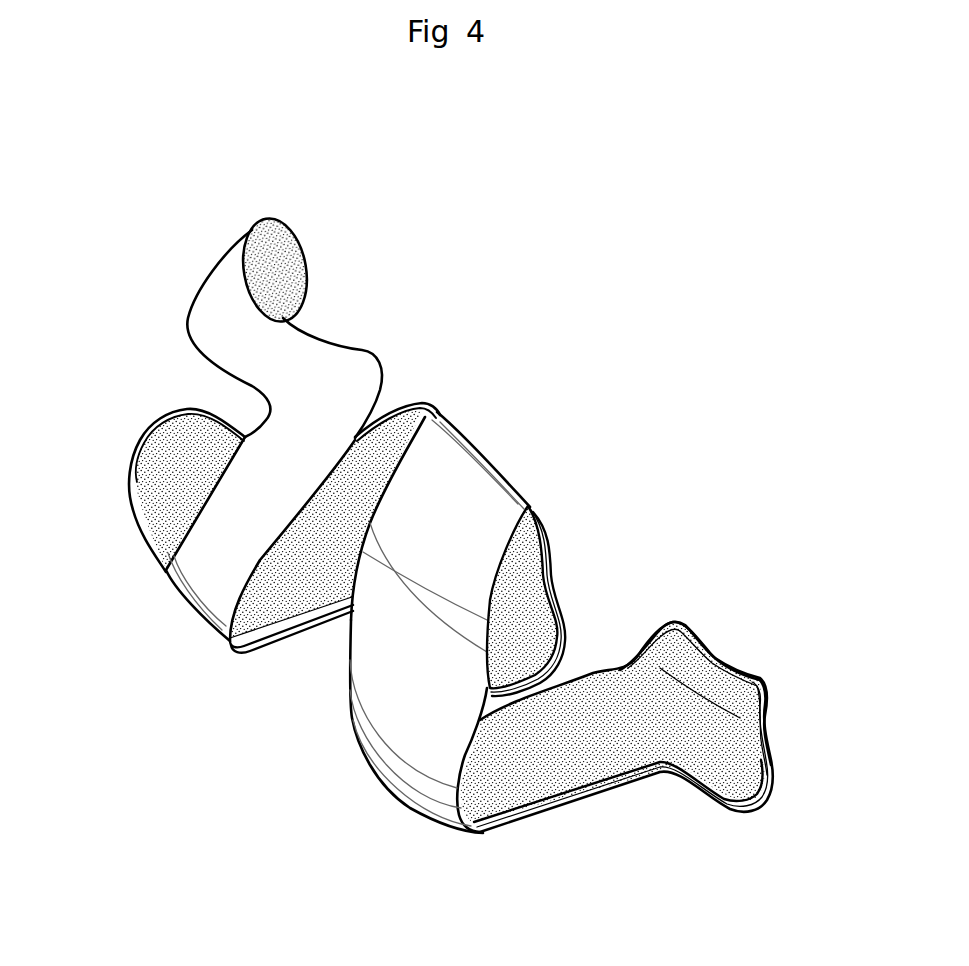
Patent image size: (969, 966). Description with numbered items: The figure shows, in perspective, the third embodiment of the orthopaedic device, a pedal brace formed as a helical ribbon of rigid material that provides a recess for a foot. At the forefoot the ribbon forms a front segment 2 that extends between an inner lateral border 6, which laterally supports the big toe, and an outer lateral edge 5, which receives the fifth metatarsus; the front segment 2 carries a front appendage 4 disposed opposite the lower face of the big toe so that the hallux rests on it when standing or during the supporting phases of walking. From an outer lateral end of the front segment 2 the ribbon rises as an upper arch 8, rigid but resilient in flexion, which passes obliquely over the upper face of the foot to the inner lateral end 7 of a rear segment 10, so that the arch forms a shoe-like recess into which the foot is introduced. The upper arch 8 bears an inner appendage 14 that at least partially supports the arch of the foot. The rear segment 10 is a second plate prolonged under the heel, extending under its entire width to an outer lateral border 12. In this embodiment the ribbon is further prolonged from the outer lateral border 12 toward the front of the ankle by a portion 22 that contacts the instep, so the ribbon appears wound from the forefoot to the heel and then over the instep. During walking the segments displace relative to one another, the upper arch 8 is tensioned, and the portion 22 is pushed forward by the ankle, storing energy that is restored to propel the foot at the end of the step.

The front segment 2 is at (619, 812).
The front appendage 4 is at (770, 796).
The outer lateral edge 5 is at (413, 825).
The inner lateral border 6 is at (748, 645).
The inner lateral end 7 is at (309, 562).
The upper arch 8 is at (380, 687).
The rear segment 10 is at (154, 518).
The outer lateral border 12 is at (178, 609).
The inner appendage 14 is at (580, 621).
The portion 22 is at (300, 355).